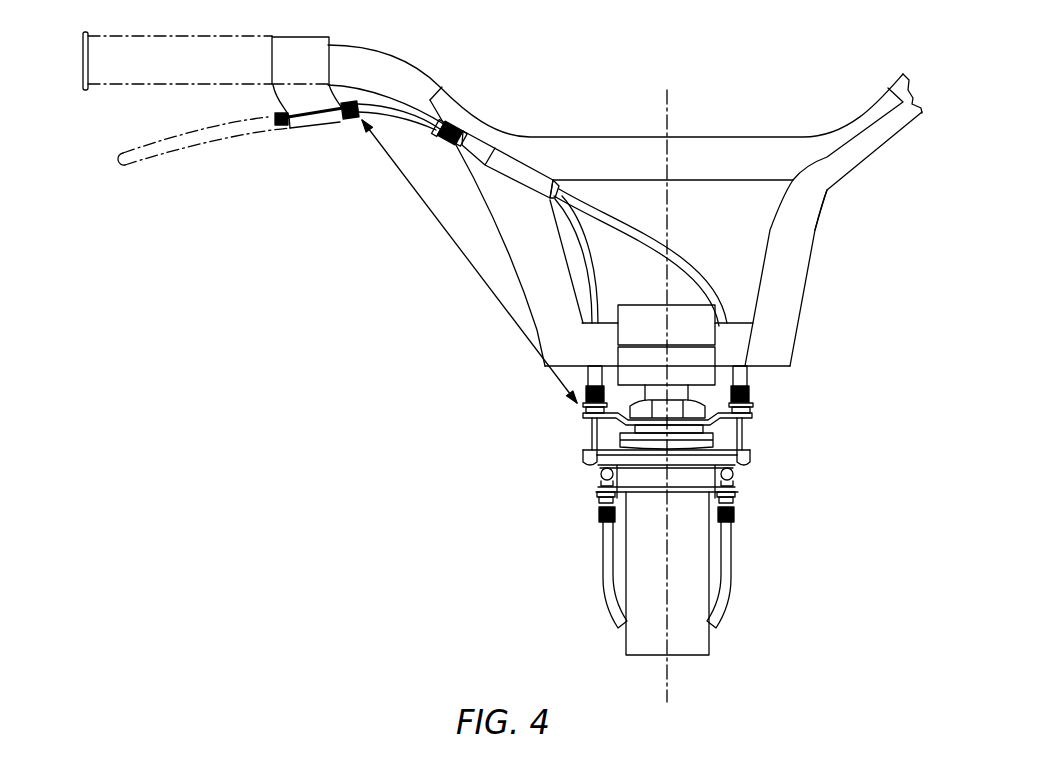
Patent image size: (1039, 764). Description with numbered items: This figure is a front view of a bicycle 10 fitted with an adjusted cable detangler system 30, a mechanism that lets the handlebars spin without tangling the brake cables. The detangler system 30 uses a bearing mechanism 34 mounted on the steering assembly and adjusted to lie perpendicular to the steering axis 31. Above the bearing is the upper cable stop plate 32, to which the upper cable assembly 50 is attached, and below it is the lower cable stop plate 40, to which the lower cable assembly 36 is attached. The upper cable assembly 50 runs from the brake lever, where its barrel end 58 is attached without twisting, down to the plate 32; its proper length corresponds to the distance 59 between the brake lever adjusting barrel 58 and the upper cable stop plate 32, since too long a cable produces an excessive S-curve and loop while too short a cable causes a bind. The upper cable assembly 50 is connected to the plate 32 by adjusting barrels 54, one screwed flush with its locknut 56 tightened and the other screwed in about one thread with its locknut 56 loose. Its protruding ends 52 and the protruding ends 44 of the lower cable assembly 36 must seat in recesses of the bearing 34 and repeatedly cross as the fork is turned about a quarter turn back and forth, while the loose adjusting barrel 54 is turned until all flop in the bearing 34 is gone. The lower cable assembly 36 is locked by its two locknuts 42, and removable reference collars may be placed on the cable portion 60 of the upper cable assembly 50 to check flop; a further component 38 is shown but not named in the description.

The bicycle 10 is at (636, 92).
The cable detangler system 30 is at (838, 415).
The steering axis 31 is at (667, 683).
The upper cable stop plate 32 is at (583, 414).
The bearing mechanism 34 is at (587, 453).
The lower cable assembly 36 is at (603, 557).
The nut 38 is at (737, 513).
The lower cable stop plate 40 is at (598, 490).
The locknuts 42 is at (740, 498).
The protruding ends 44 is at (733, 475).
The upper cable assembly 50 is at (567, 203).
The protruding ends 52 is at (748, 463).
The adjusting barrels 54 is at (750, 389).
The locknut 56 is at (752, 410).
The barrel end 58 is at (353, 119).
The distance 59 is at (483, 284).
The cable portion 60 is at (742, 435).